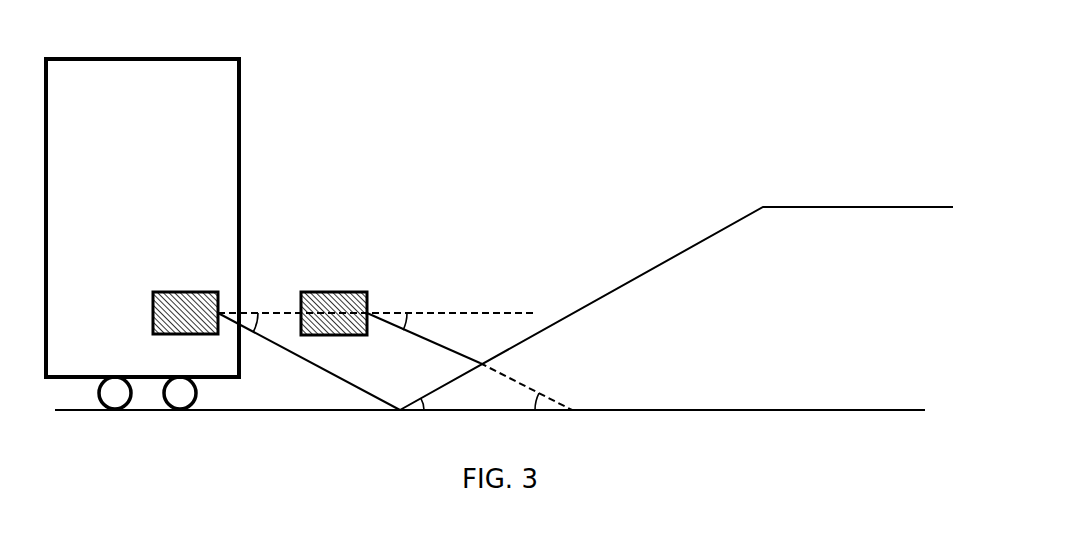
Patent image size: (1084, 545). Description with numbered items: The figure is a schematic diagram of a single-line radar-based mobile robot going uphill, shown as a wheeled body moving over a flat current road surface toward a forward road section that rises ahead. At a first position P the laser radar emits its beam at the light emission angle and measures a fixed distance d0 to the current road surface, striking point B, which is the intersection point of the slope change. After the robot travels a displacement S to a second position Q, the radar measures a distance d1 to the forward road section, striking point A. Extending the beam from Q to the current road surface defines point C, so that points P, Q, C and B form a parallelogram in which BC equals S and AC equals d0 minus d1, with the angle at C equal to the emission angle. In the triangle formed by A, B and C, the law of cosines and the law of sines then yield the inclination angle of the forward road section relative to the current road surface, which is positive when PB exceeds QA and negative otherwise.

The first position P is at (185, 298).
The second position Q is at (334, 299).
The displacement S is at (376, 298).
The point A is at (526, 373).
The point B is at (400, 433).
The point C is at (582, 433).
The fixed distance d0 is at (309, 361).
The measured distance d1 is at (423, 344).